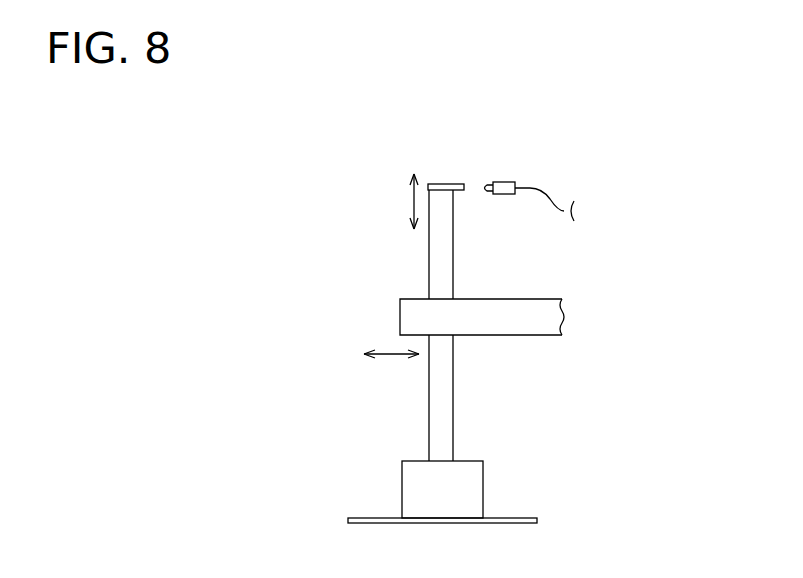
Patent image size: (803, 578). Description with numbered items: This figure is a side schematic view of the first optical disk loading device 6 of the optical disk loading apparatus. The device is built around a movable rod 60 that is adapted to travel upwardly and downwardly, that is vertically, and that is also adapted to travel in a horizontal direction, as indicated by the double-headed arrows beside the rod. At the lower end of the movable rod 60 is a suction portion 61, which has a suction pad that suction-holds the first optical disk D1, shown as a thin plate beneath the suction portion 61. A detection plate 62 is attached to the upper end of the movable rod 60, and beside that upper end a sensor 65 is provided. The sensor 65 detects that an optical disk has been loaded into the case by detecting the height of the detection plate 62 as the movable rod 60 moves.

The first optical disk loading device 6 is at (335, 212).
The movable rod 60 is at (432, 280).
The suction portion 61 is at (407, 482).
The detection plate 62 is at (442, 180).
The sensor 65 is at (505, 180).
The first optical disk D1 is at (535, 512).